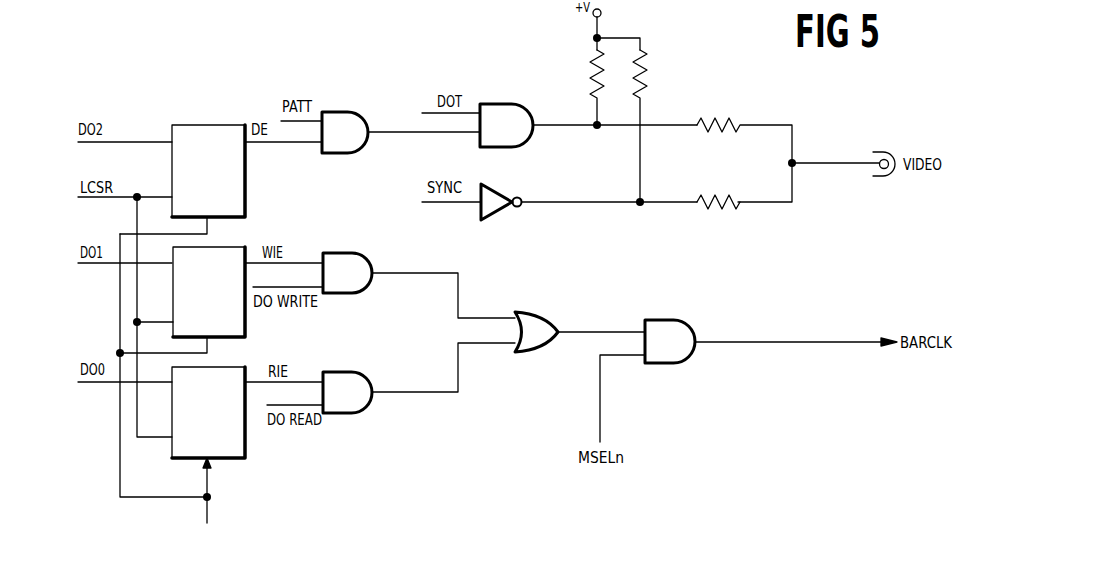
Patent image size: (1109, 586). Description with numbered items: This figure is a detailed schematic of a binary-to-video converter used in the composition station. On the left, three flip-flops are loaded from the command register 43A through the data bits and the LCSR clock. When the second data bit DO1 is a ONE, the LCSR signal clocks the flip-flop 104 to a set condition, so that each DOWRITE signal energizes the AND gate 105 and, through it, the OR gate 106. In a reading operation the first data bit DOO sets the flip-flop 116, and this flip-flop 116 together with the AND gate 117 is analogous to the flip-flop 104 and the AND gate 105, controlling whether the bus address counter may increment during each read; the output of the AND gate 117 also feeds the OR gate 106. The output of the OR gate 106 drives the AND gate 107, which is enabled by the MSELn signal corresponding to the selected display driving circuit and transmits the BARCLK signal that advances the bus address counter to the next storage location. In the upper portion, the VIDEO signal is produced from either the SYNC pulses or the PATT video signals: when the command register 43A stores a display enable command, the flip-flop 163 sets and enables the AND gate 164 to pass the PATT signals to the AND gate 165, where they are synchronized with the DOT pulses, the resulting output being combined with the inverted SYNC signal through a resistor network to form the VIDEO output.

The command register 43A is at (198, 108).
The flip-flop 163 is at (212, 124).
The flip-flop 104 is at (215, 247).
The flip-flop 116 is at (246, 443).
The AND gate 164 is at (345, 132).
The AND gate 165 is at (506, 125).
The AND gate 105 is at (347, 273).
The AND gate 117 is at (347, 392).
The OR gate 106 is at (536, 332).
The AND gate 107 is at (670, 341).